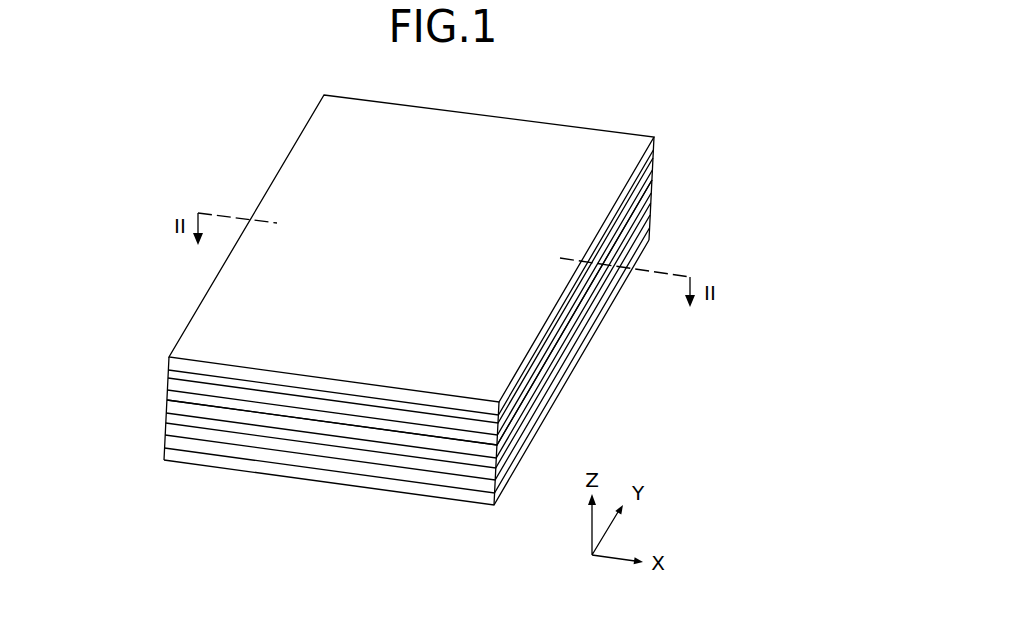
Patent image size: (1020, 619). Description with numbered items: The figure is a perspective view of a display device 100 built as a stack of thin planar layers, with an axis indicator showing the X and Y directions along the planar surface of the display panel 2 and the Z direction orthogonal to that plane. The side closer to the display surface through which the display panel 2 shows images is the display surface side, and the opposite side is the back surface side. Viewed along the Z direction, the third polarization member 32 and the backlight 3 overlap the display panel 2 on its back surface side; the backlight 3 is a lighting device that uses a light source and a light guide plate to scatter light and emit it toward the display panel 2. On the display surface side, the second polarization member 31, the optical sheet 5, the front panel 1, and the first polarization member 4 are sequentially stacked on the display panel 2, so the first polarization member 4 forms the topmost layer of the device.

The display device 100 is at (650, 96).
The first polarization member 4 is at (554, 138).
The front panel 1 is at (657, 150).
The display panel 2 is at (656, 190).
The backlight 3 is at (655, 223).
The optical sheet 5 is at (168, 386).
The second polarization member 31 is at (185, 405).
The third polarization member 32 is at (178, 432).